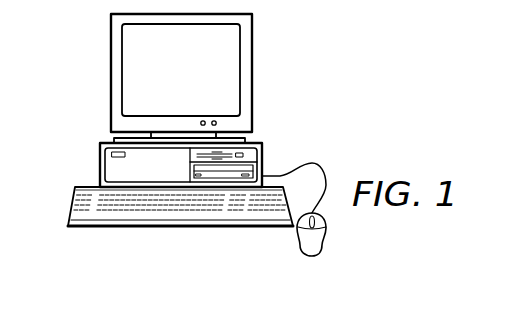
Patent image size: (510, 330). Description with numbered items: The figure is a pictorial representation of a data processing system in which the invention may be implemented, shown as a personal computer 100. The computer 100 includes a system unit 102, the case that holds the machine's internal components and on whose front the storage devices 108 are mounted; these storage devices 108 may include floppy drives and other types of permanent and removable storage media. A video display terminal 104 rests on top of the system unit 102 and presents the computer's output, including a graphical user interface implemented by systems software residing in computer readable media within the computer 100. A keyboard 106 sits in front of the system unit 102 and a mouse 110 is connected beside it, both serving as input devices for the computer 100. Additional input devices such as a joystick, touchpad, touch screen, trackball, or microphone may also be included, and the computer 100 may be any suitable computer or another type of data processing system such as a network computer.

The computer 100 is at (346, 91).
The system unit 102 is at (100, 163).
The video display terminal 104 is at (252, 73).
The keyboard 106 is at (93, 227).
The storage devices 108 is at (232, 156).
The mouse 110 is at (325, 237).